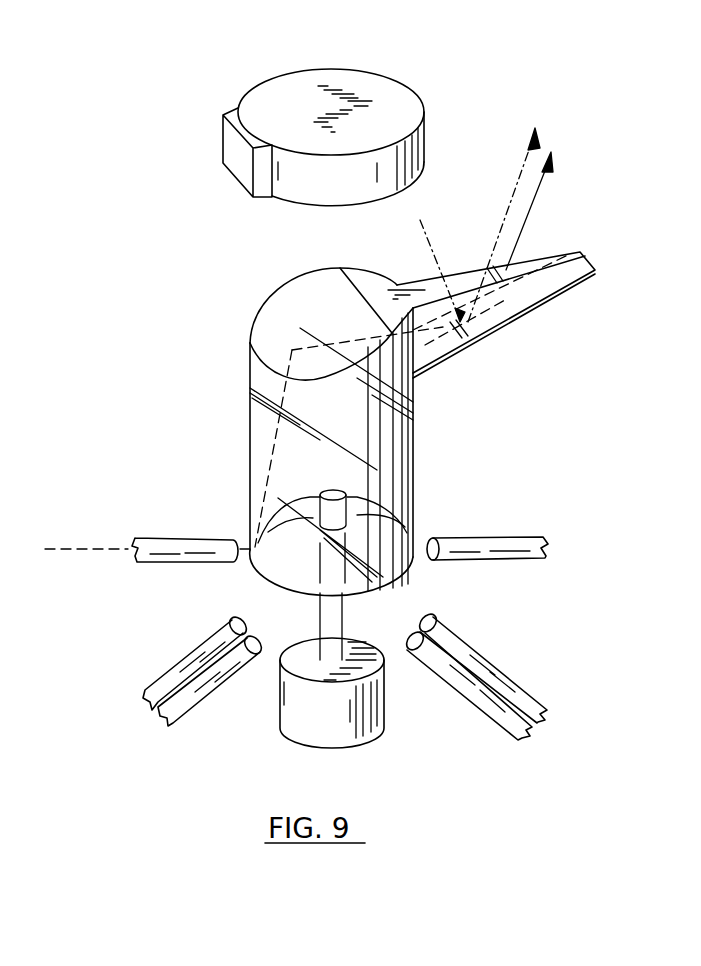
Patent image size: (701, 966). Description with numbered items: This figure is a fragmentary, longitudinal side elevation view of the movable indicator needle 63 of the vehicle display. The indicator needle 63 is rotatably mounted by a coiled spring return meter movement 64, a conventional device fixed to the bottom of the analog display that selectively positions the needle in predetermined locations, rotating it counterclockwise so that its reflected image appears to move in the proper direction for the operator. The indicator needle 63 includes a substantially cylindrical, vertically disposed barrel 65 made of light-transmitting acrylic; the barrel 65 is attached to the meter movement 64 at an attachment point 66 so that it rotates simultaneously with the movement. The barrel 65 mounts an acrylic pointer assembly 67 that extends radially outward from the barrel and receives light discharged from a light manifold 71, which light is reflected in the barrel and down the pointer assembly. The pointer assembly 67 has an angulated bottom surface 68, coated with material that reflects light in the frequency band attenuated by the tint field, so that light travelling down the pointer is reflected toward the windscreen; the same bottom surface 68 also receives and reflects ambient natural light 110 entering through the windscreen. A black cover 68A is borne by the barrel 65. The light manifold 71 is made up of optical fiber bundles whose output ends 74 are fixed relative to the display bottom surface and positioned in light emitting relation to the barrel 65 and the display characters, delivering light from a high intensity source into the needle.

The indicator needle 63 is at (233, 422).
The coiled spring return meter movement 64 is at (302, 745).
The barrel 65 is at (405, 442).
The attachment point 66 is at (357, 507).
The pointer assembly 67 is at (408, 278).
The bottom surface 68 is at (537, 308).
The black cover 68A is at (332, 76).
The light manifold 71 is at (153, 716).
The output end 74 is at (183, 657).
The ambient natural light 110 is at (528, 153).